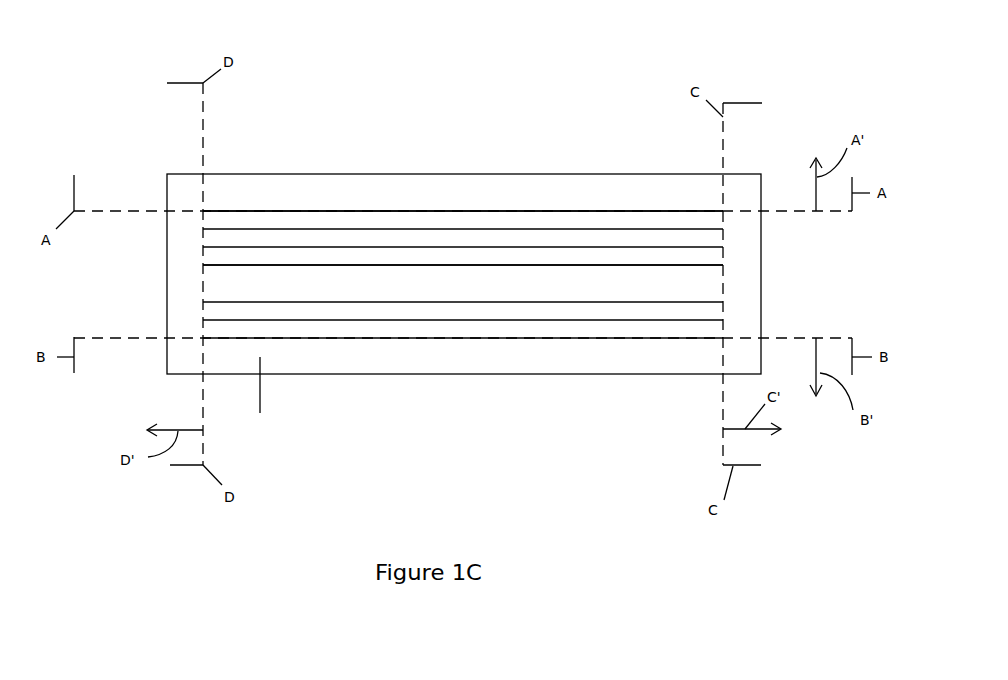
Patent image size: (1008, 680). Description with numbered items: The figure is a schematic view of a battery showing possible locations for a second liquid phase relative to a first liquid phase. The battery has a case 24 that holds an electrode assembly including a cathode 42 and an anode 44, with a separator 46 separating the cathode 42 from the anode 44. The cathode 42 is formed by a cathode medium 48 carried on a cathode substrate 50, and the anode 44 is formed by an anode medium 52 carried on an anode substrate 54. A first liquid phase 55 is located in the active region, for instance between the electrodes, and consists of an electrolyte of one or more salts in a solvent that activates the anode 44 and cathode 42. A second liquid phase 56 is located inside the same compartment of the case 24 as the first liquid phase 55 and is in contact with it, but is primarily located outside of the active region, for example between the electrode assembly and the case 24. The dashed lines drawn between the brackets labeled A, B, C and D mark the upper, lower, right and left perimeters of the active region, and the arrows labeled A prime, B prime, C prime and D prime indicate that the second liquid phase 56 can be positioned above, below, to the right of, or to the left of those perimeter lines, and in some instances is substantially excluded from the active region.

The case 24 is at (167, 273).
The cathode 42 is at (373, 198).
The anode 44 is at (352, 348).
The separator 46 is at (715, 266).
The cathode medium 48 is at (700, 248).
The cathode substrate 50 is at (612, 220).
The anode medium 52 is at (500, 303).
The anode substrate 54 is at (612, 330).
The first liquid phase 55 is at (240, 257).
The second liquid phase 56 is at (271, 395).